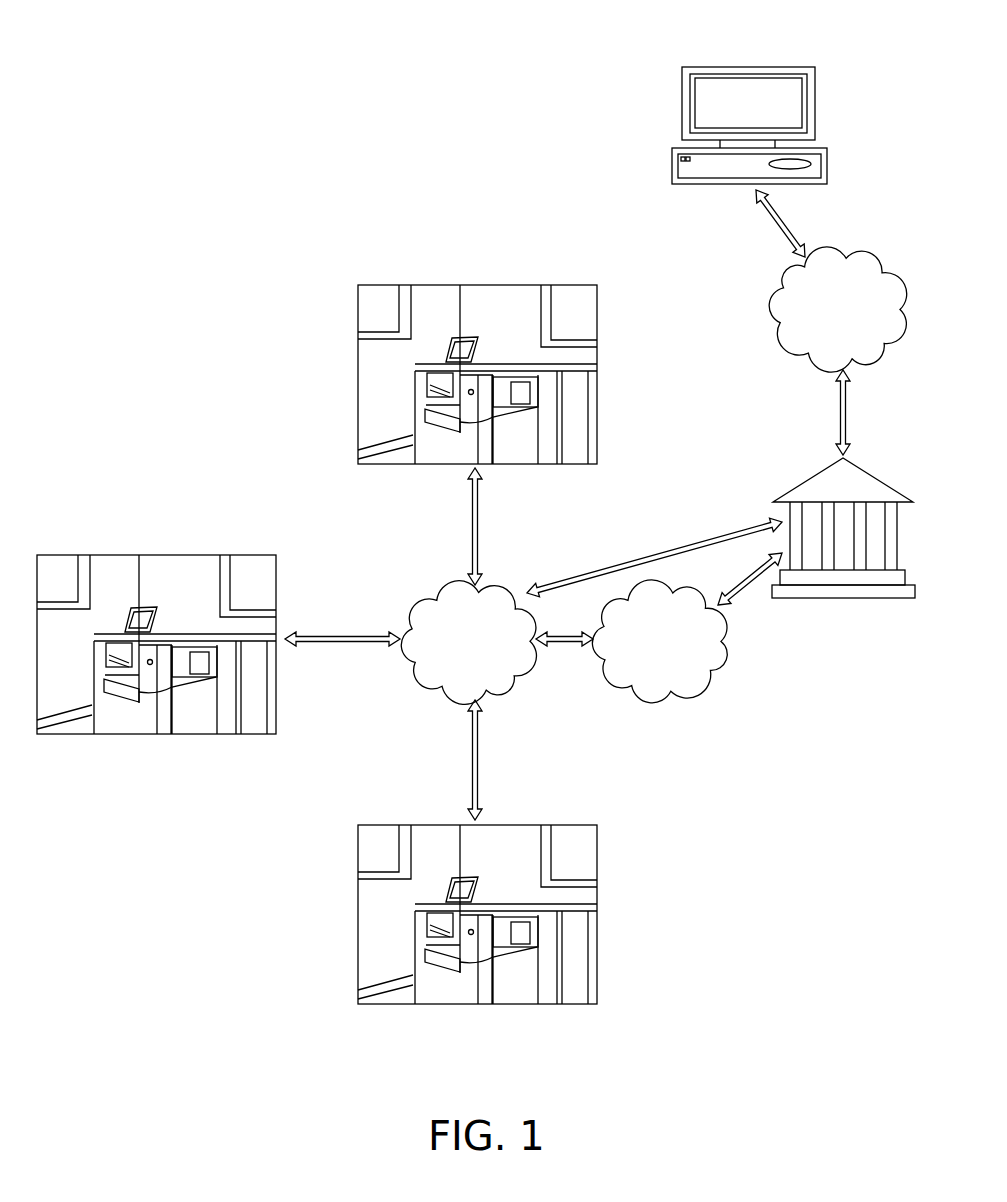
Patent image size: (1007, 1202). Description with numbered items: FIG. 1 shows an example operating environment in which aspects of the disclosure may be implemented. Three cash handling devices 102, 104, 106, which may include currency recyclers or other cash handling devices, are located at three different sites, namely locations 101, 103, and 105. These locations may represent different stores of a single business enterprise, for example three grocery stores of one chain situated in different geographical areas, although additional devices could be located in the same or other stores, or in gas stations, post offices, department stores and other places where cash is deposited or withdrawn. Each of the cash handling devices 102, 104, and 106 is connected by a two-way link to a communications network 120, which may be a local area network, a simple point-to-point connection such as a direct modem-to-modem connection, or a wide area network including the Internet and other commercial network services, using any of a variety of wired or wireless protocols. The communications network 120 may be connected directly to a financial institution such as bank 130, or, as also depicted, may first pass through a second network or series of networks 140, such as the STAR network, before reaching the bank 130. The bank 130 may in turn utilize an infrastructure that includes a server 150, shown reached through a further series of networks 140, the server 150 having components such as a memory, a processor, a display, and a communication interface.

The location 101 is at (492, 298).
The cash handling device 102 is at (435, 451).
The location 103 is at (172, 565).
The cash handling device 104 is at (120, 718).
The location 105 is at (368, 903).
The cash handling device 106 is at (440, 992).
The communications network 120 is at (508, 678).
The bank 130 is at (805, 469).
The series of networks 140 is at (665, 695).
The server 150 is at (783, 63).